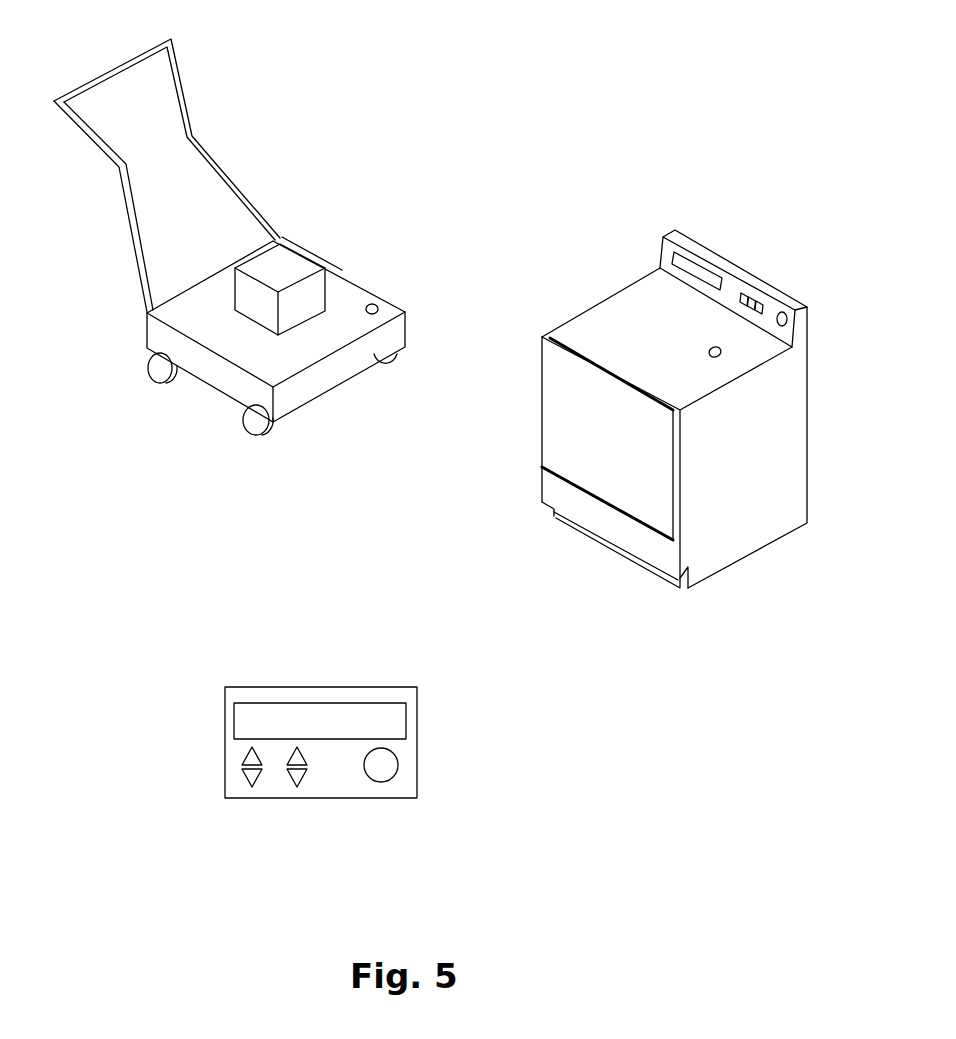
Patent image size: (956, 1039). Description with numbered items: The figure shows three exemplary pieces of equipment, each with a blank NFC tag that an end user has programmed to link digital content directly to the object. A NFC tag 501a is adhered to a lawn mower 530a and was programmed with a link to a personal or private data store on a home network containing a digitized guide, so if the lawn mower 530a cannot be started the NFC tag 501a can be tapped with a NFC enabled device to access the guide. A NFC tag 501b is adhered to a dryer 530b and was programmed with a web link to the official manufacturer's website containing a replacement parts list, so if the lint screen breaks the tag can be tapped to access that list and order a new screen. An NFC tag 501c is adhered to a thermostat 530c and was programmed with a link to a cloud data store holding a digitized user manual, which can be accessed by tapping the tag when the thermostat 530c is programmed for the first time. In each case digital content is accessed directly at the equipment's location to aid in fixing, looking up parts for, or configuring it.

The lawn mower 530a is at (316, 203).
The NFC tag 501a is at (376, 303).
The dryer 530b is at (626, 228).
The NFC tag 501b is at (720, 357).
The thermostat 530c is at (233, 624).
The NFC tag 501c is at (398, 767).